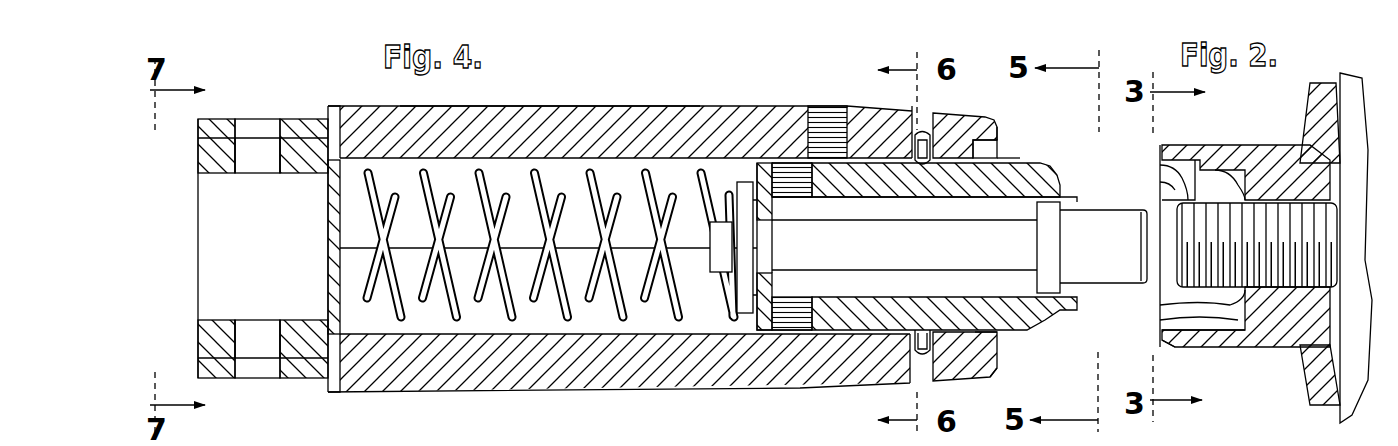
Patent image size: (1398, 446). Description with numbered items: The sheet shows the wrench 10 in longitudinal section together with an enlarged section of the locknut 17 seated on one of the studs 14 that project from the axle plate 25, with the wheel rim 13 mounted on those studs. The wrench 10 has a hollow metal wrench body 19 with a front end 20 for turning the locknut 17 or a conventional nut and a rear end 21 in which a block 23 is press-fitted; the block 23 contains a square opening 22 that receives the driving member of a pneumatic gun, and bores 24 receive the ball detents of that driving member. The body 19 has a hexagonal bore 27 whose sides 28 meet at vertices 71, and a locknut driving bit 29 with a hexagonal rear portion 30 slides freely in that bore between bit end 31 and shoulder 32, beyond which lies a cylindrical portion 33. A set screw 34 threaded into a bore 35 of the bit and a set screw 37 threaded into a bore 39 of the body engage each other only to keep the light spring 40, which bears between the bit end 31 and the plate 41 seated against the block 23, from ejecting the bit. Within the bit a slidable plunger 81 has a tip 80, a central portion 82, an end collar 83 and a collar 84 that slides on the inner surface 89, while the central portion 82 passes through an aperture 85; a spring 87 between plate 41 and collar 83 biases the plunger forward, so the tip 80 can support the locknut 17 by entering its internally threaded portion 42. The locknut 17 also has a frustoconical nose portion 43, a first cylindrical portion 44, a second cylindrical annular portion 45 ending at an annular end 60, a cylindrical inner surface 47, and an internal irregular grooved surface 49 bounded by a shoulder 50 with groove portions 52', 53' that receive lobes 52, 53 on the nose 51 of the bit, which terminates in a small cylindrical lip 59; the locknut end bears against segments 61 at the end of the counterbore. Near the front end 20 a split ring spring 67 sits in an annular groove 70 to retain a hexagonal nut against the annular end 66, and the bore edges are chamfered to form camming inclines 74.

In FIG. 4, the wrench 10 is at (708, 88).
In FIG. 2, the rim 13 is at (1300, 110).
In FIG. 2, the studs 14 is at (1165, 181).
In FIG. 2, the locknut 17 is at (1265, 145).
In FIG. 4, the wrench body 19 is at (752, 107).
In FIG. 4, the front end 20 is at (965, 132).
In FIG. 4, the rear end 21 is at (232, 119).
In FIG. 4, the square opening 22 is at (210, 180).
In FIG. 4, the block 23 is at (200, 332).
In FIG. 4, the bores 24 is at (250, 160).
In FIG. 2, the plate 25 is at (1352, 100).
In FIG. 4, the hexagonal bore 27 is at (515, 158).
In FIG. 4, the sides 28 is at (512, 262).
In FIG. 4, the locknut driving bit 29 is at (1020, 170).
In FIG. 4, the hexagonal rear portion 30 is at (885, 192).
In FIG. 4, the bit end 31 is at (753, 185).
In FIG. 4, the shoulder 32 is at (930, 192).
In FIG. 4, the cylindrical portion 33 is at (975, 195).
In FIG. 4, the set screw 34 is at (786, 208).
In FIG. 4, the bore 35 is at (800, 197).
In FIG. 4, the set screw 37 is at (836, 108).
In FIG. 4, the bore 39 is at (816, 110).
In FIG. 4, the light spring 40 is at (612, 277).
In FIG. 4, the plate 41 is at (330, 228).
In FIG. 2, the internally threaded portion 42 is at (1335, 205).
In FIG. 2, the frustoconical nose portion 43 is at (1302, 352).
In FIG. 2, the first cylindrical portion 44 is at (1265, 350).
In FIG. 2, the second cylindrical annular portion 45 is at (1188, 347).
In FIG. 2, the cylindrical inner surface 47 is at (1165, 163).
In FIG. 2, the internal irregular grooved surface 49 is at (1178, 322).
In FIG. 2, the shoulder 50 is at (1245, 172).
In FIG. 4, the nose 51 is at (1045, 175).
In FIG. 4, the lobe 52 is at (1081, 180).
In FIG. 2, the groove portion 52' is at (1187, 155).
In FIG. 4, the lobe 53 is at (1061, 324).
In FIG. 2, the groove portion 53' is at (1177, 303).
In FIG. 4, the cylindrical lip 59 is at (985, 347).
In FIG. 2, the annular end 60 is at (1168, 338).
In FIG. 4, the segments 61 is at (990, 338).
In FIG. 4, the annular end 66 is at (997, 142).
In FIG. 4, the split ring spring 67 is at (920, 360).
In FIG. 4, the annular groove 70 is at (922, 136).
In FIG. 4, the vertices 71 is at (572, 246).
In FIG. 4, the inclines 74 is at (1000, 152).
In FIG. 4, the tip 80 is at (1113, 267).
In FIG. 4, the plunger 81 is at (870, 267).
In FIG. 4, the central portion 82 is at (910, 270).
In FIG. 4, the collar 83 is at (732, 305).
In FIG. 4, the collar 84 is at (1062, 228).
In FIG. 4, the aperture 85 is at (772, 272).
In FIG. 4, the spring 87 is at (490, 290).
In FIG. 4, the inner surface 89 is at (1015, 205).